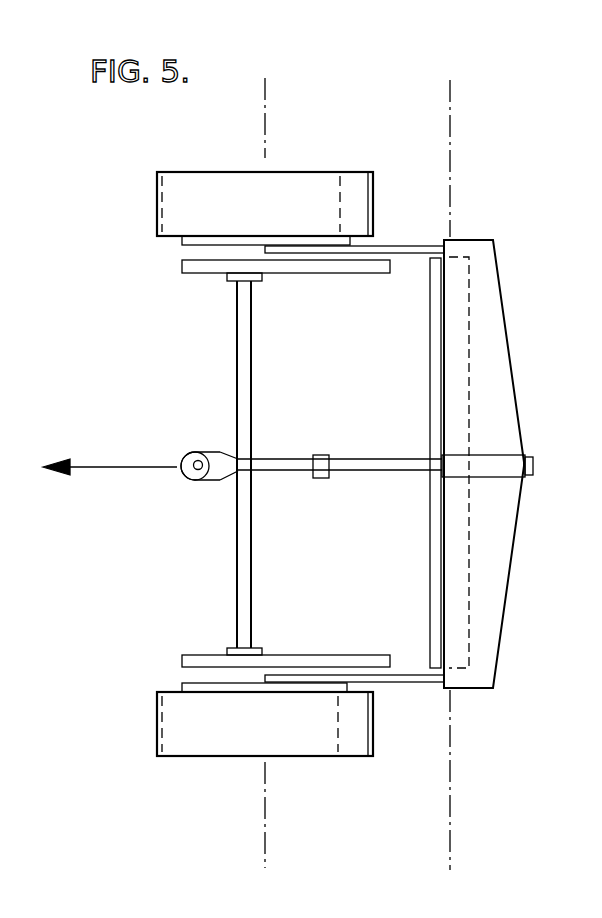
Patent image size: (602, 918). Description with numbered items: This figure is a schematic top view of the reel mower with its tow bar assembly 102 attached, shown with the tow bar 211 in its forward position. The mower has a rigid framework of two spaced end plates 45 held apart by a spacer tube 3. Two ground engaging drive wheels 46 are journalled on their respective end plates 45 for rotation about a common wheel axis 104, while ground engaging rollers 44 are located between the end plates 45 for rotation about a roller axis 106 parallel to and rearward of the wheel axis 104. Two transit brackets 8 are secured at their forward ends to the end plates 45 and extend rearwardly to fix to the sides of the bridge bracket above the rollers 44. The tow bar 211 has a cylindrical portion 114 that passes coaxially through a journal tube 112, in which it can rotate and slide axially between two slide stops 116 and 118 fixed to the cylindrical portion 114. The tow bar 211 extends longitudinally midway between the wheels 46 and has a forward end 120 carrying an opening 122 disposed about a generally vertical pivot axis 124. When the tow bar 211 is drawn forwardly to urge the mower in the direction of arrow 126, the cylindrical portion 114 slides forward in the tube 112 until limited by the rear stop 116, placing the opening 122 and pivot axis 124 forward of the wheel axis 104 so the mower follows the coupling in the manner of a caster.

The spacer tube 3 is at (240, 575).
The transit bracket 8 is at (412, 246).
The ground engaging roller 44 is at (431, 347).
The end plate 45 is at (308, 268).
The ground engaging drive wheel 46 is at (208, 185).
The tow bar assembly 102 is at (507, 535).
The wheel axis 104 is at (265, 850).
The roller axis 106 is at (450, 830).
The journal tube 112 is at (507, 452).
The cylindrical portion 114 is at (377, 468).
The rear slide stop 116 is at (535, 463).
The slide stop 118 is at (327, 453).
The forward end 120 is at (187, 474).
The opening 122 is at (200, 469).
The pivot axis 124 is at (196, 461).
The arrow 126 is at (127, 462).
The tow bar 211 is at (289, 459).